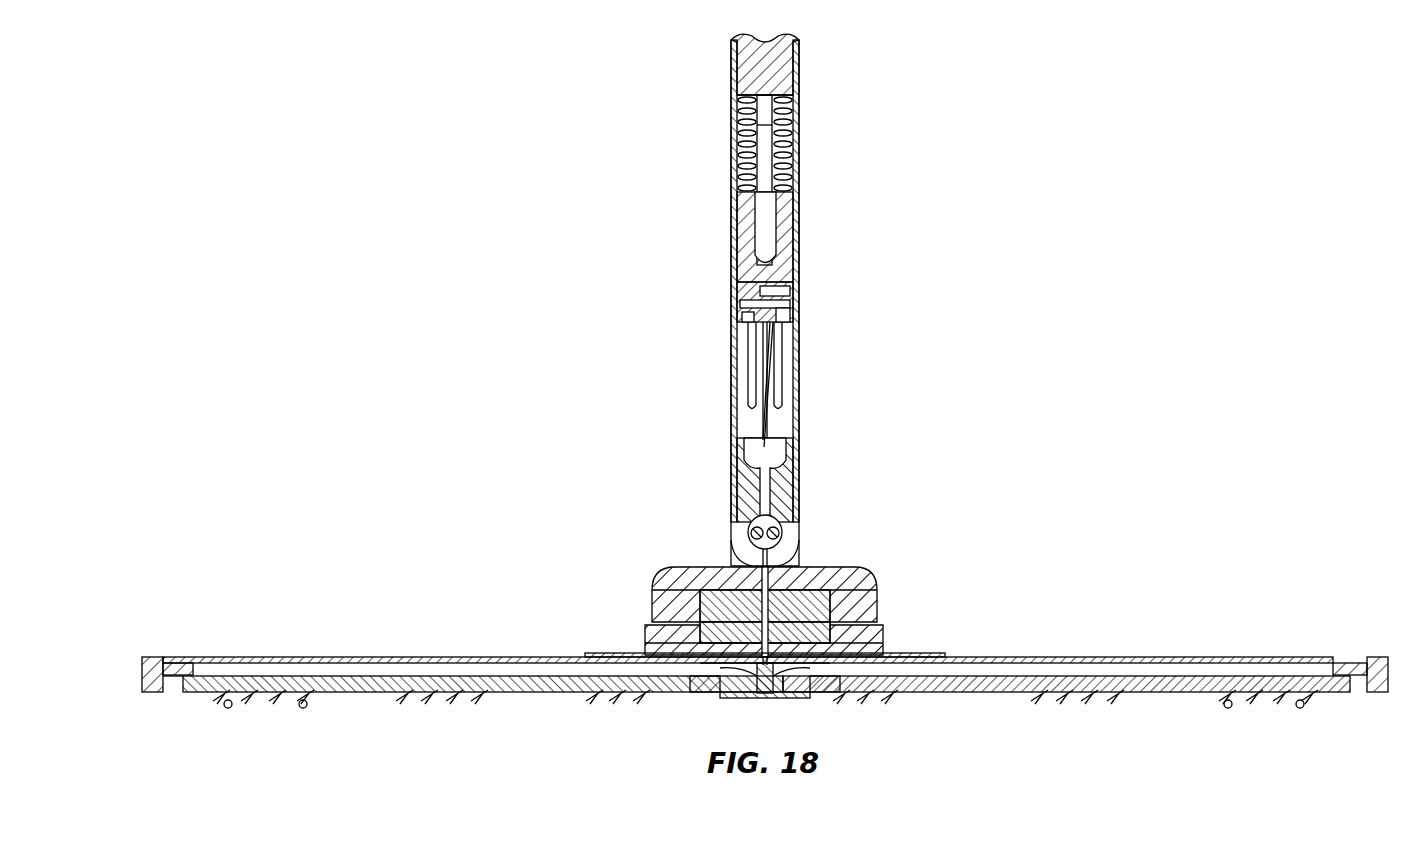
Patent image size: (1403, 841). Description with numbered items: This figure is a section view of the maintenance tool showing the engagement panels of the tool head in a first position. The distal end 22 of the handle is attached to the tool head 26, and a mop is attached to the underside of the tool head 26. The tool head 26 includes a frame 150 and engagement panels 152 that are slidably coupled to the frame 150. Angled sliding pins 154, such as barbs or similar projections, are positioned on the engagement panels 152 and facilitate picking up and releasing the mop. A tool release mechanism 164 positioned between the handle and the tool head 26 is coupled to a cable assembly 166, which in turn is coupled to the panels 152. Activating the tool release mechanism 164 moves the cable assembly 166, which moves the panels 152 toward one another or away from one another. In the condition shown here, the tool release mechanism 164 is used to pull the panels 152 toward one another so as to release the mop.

The distal end 22 is at (800, 238).
The tool release mechanism 164 is at (793, 75).
The cable assembly 166 is at (768, 436).
The tool head 26 is at (960, 618).
The frame 150 is at (357, 657).
The engagement panels 152 is at (355, 693).
The angled sliding pins 154 is at (458, 702).